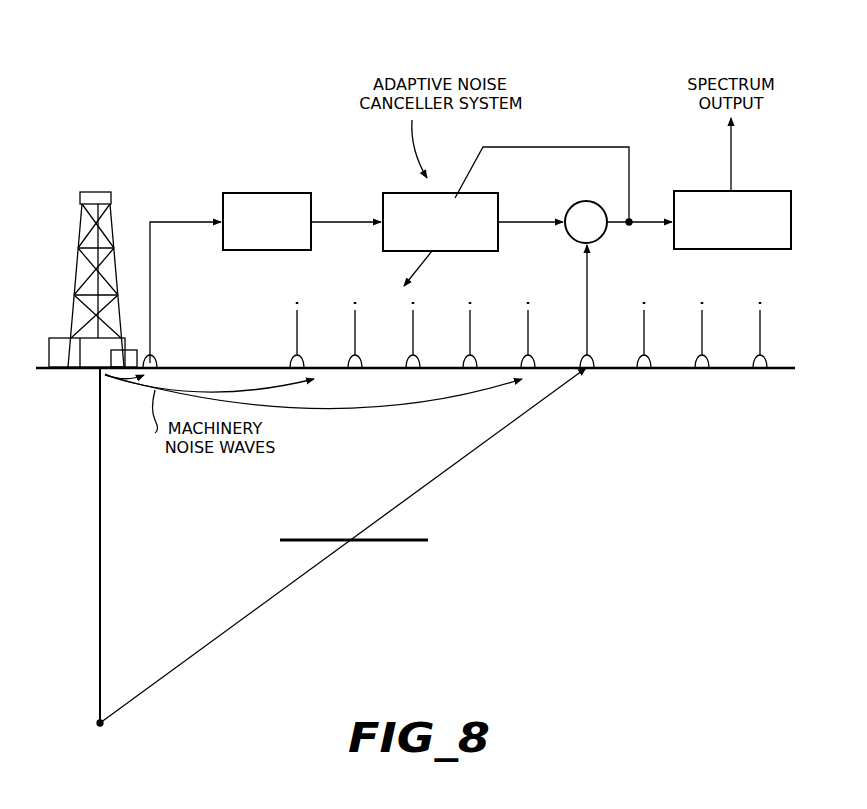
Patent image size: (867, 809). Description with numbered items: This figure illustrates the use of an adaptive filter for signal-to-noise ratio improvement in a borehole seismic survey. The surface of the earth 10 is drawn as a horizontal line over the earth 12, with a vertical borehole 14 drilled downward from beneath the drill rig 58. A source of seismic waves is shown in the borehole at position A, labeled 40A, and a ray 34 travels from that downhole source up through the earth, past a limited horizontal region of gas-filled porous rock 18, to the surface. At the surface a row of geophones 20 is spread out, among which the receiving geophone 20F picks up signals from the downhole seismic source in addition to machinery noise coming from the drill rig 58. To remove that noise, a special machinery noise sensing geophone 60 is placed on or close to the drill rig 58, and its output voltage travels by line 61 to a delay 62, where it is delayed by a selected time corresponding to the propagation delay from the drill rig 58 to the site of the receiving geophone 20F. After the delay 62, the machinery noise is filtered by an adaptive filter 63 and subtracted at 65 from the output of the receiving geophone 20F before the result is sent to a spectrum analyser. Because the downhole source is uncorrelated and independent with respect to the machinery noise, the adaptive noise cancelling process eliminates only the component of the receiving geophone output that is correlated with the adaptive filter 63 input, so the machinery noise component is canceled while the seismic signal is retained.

The surface of the earth 10 is at (250, 367).
The earth 12 is at (640, 621).
The vertical borehole 14 is at (101, 520).
The gas-filled porous rock 18 is at (395, 545).
The geophones 20 is at (630, 395).
The receiving geophone 20F is at (583, 358).
The rays 34 is at (478, 450).
The source of seismic waves at position A 40A is at (101, 727).
The drill rig 58 is at (77, 259).
The machinery noise sensing geophone 60 is at (158, 362).
The line 61 is at (150, 272).
The delay 62 is at (275, 250).
The adaptive filter 63 is at (478, 251).
The subtraction 65 is at (598, 240).